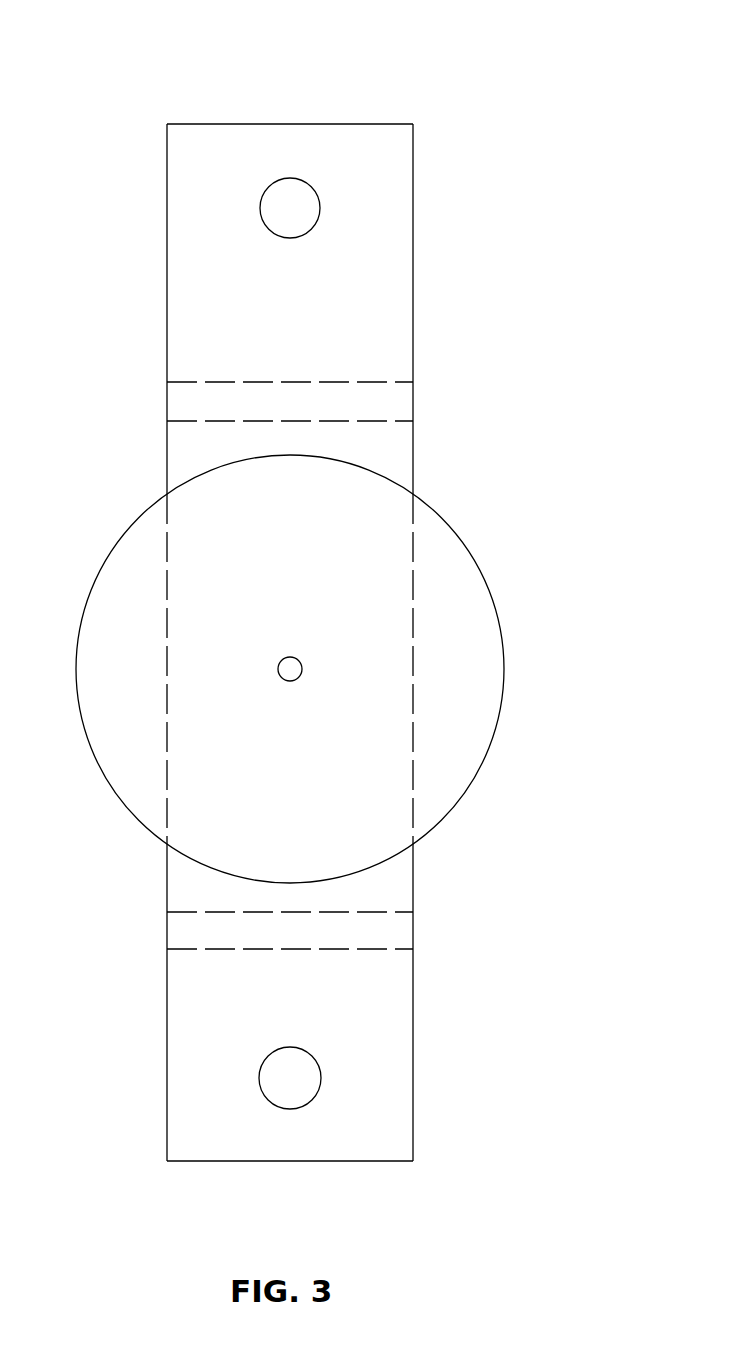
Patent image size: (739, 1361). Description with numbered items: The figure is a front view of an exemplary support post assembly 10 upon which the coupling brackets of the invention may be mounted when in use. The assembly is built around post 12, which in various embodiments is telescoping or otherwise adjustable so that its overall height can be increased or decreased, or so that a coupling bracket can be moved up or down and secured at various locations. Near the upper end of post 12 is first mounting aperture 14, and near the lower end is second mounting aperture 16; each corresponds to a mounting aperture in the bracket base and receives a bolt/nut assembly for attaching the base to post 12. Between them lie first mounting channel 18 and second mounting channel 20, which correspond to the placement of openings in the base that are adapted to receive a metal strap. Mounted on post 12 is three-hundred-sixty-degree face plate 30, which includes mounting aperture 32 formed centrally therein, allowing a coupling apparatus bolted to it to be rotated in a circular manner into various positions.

The support post assembly 10 is at (321, 607).
The post 12 is at (306, 326).
The first mounting aperture 14 is at (292, 178).
The second mounting aperture 16 is at (258, 1092).
The first mounting channel 18 is at (413, 403).
The second mounting channel 20 is at (413, 934).
The 360° face plate 30 is at (478, 568).
The mounting aperture 32 is at (279, 663).